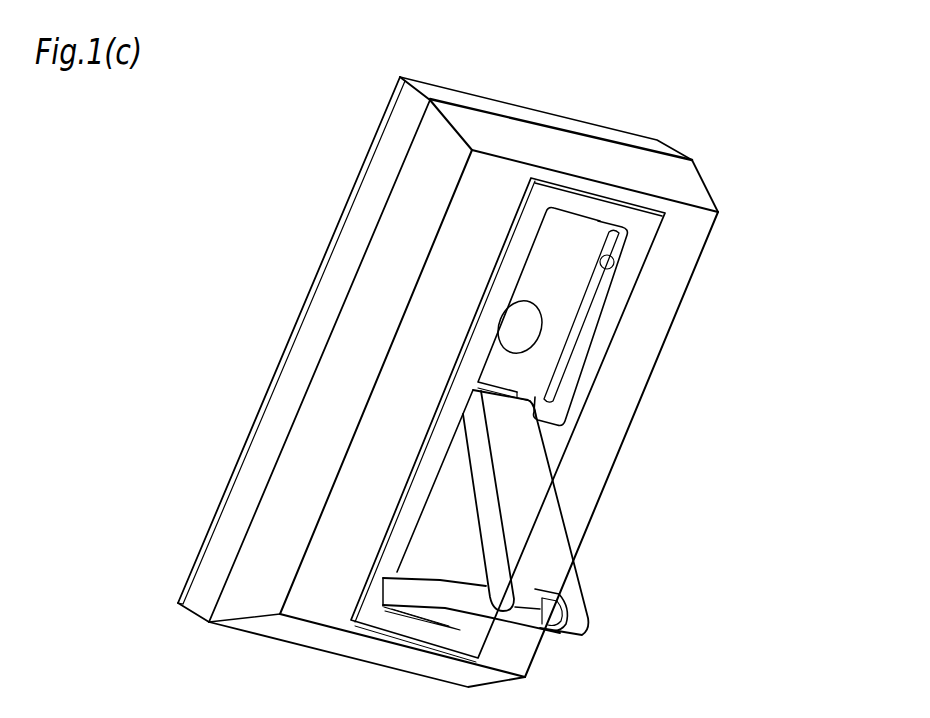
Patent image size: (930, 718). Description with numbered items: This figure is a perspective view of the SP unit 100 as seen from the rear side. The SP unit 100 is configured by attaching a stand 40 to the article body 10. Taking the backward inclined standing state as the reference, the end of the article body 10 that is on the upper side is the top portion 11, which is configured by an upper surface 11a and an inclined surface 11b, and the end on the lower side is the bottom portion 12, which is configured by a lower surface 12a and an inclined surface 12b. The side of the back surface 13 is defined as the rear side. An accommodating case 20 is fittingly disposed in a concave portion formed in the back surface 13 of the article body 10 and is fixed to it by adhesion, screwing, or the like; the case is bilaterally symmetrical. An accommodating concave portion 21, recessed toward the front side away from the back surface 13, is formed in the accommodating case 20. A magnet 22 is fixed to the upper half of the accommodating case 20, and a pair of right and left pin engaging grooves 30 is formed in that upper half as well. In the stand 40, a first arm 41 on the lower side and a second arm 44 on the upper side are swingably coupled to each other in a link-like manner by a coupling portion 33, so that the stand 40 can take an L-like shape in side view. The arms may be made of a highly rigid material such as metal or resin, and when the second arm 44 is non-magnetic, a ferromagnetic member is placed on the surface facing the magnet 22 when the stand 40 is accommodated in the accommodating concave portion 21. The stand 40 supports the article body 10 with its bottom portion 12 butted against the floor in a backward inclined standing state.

The SP unit 100 is at (291, 105).
The article body 10 is at (718, 214).
The top portion 11 is at (772, 102).
The upper surface 11a is at (657, 148).
The inclined surface 11b is at (687, 178).
The bottom portion 12 is at (113, 632).
The lower surface 12a is at (190, 614).
The inclined surface 12b is at (252, 623).
The back surface 13 is at (642, 366).
The accommodating case 20 is at (550, 197).
The accommodating concave portion 21 is at (542, 254).
The magnet 22 is at (538, 316).
The pin engaging groove 30 is at (607, 267).
The coupling portion 33 is at (591, 626).
The stand 40 is at (566, 528).
The first arm 41 is at (477, 600).
The second arm 44 is at (567, 566).